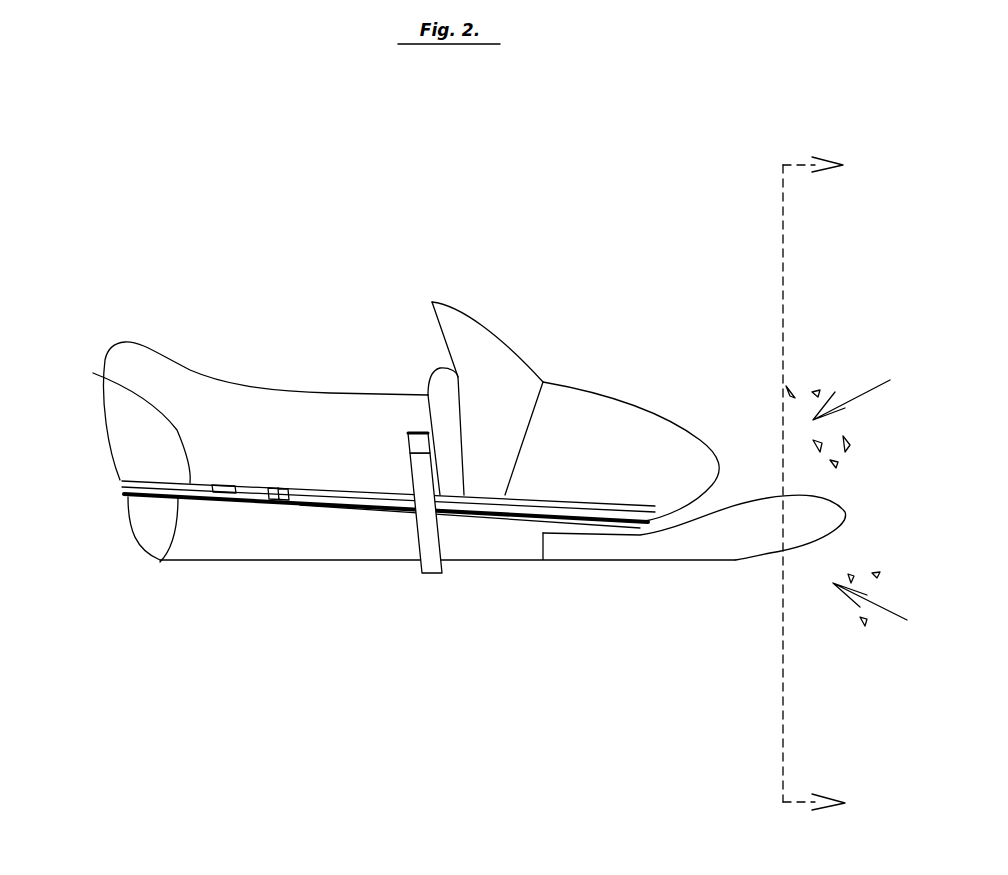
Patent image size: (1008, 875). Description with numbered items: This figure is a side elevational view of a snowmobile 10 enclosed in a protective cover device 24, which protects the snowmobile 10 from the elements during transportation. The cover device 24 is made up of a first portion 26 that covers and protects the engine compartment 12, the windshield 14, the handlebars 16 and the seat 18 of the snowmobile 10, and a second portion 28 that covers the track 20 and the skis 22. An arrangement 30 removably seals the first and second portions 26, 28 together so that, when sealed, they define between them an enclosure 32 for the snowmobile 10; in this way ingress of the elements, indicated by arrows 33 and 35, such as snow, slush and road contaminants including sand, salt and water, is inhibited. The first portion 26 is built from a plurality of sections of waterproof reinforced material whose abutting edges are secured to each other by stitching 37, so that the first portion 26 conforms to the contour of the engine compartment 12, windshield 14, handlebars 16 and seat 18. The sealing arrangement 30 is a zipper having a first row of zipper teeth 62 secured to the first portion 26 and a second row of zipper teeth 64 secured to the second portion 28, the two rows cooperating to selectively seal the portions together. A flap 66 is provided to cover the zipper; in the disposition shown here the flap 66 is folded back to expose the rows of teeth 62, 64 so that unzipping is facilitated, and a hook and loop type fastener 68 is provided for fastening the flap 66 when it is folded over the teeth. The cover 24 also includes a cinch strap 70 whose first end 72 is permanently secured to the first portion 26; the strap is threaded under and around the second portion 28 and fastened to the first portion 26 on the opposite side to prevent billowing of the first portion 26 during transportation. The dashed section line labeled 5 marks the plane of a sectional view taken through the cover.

The snowmobile 10 is at (293, 270).
The engine compartment 12 is at (630, 433).
The windshield 14 is at (497, 353).
The handlebars 16 is at (440, 383).
The seat 18 is at (255, 403).
The track 20 is at (350, 535).
The skis 22 is at (643, 548).
The protective cover device 24 is at (450, 297).
The first portion 26 is at (181, 386).
The second portion 28 is at (250, 530).
The sealing arrangement 30 is at (127, 484).
The enclosure 32 is at (348, 471).
The arrows indicating ingress of elements 33 is at (853, 395).
The arrows indicating ingress of elements 35 is at (882, 615).
The stitching 37 is at (519, 455).
The section line 5- 5 is at (829, 485).
The first row of zipper teeth 62 is at (124, 425).
The second row of zipper teeth 64 is at (160, 562).
The flap 66 is at (323, 493).
The hook and loop type fastener 68 is at (278, 495).
The cinch strap 70 is at (432, 525).
The first end 72 is at (407, 433).